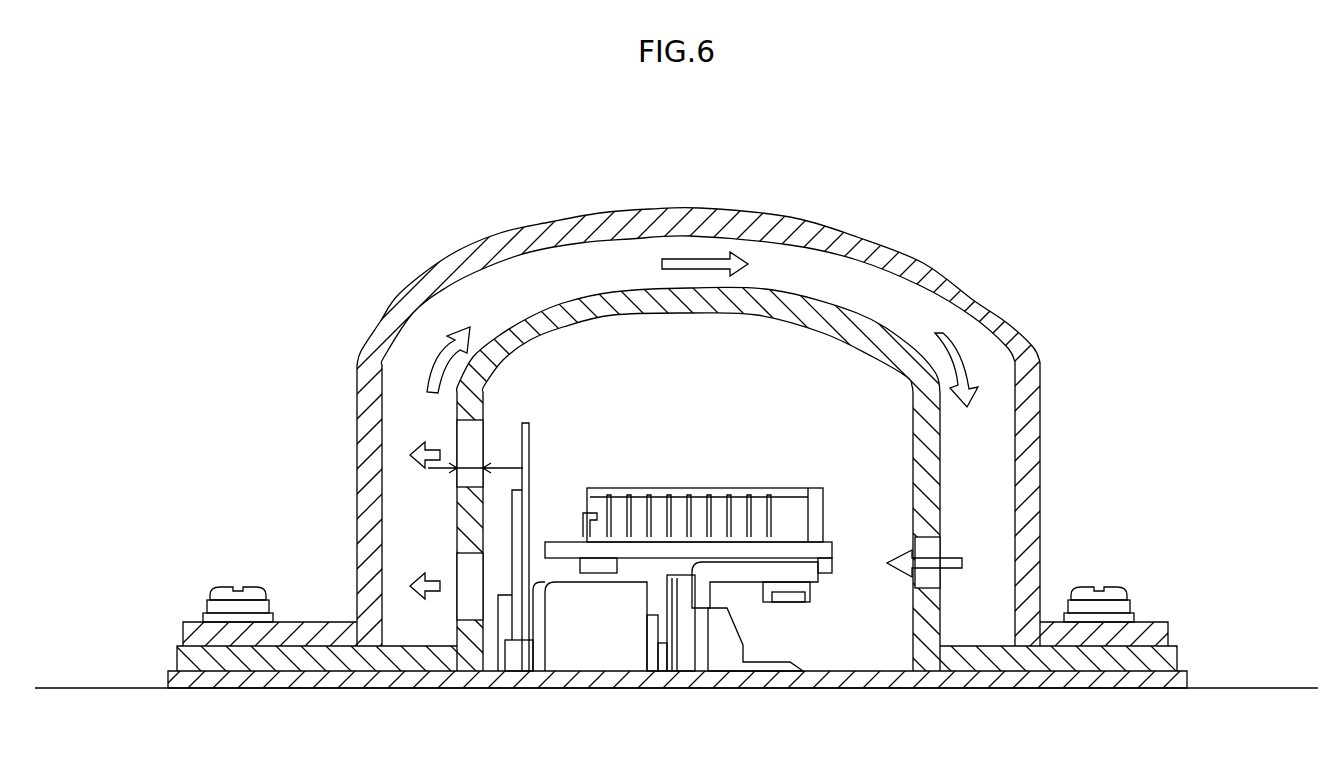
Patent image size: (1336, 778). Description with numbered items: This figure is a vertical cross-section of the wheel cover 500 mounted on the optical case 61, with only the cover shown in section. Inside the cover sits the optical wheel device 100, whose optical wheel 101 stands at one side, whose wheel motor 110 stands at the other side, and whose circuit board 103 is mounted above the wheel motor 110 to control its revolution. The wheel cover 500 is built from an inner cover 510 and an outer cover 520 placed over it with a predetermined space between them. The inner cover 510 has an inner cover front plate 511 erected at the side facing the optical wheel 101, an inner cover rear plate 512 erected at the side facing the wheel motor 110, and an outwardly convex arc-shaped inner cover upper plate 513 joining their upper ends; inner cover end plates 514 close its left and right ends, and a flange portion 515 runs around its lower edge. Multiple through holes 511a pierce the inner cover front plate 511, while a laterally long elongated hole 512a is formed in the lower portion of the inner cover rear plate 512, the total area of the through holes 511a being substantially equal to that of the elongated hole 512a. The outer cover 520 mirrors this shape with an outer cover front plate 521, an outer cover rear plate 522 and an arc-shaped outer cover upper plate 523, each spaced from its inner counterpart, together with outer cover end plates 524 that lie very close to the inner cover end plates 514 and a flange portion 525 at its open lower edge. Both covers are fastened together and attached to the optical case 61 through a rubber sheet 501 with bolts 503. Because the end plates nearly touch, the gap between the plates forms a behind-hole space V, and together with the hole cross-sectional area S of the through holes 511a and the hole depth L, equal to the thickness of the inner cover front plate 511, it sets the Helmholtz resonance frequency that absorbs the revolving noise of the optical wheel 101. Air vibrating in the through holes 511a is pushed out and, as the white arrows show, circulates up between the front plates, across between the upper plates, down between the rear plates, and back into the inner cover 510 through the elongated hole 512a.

The optical case 61 is at (1270, 730).
The optical wheel device 100 is at (615, 391).
The optical wheel 101 is at (530, 445).
The circuit board 103 is at (788, 548).
The wheel motor 110 is at (607, 640).
The wheel cover 500 is at (952, 223).
The rubber sheet 501 is at (177, 680).
The bolts 503 is at (232, 595).
The inner cover 510 is at (668, 406).
The inner cover front plate 511 is at (467, 525).
The through holes 511a is at (467, 565).
The inner cover rear plate 512 is at (928, 510).
The elongated hole 512a is at (928, 548).
The inner cover upper plate 513 is at (768, 305).
The inner cover end plates 514 is at (655, 391).
The flange portion 515 is at (190, 660).
The outer cover 520 is at (668, 402).
The outer cover front plate 521 is at (372, 392).
The outer cover rear plate 522 is at (1027, 377).
The outer cover upper plate 523 is at (705, 220).
The outer cover end plates 524 is at (690, 360).
The flange portion 525 is at (205, 633).
The hole cross-sectional area S is at (470, 437).
The behind-hole space V is at (436, 360).
The hole depth L is at (475, 453).